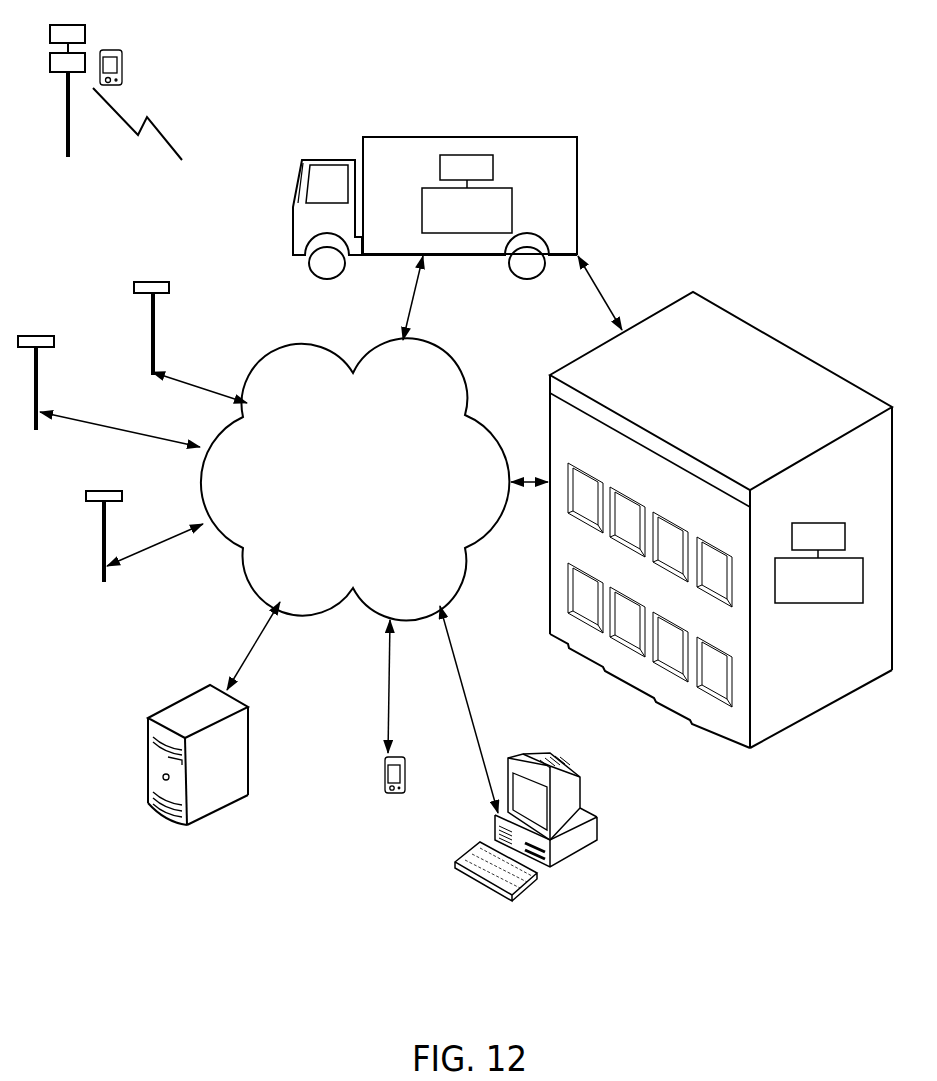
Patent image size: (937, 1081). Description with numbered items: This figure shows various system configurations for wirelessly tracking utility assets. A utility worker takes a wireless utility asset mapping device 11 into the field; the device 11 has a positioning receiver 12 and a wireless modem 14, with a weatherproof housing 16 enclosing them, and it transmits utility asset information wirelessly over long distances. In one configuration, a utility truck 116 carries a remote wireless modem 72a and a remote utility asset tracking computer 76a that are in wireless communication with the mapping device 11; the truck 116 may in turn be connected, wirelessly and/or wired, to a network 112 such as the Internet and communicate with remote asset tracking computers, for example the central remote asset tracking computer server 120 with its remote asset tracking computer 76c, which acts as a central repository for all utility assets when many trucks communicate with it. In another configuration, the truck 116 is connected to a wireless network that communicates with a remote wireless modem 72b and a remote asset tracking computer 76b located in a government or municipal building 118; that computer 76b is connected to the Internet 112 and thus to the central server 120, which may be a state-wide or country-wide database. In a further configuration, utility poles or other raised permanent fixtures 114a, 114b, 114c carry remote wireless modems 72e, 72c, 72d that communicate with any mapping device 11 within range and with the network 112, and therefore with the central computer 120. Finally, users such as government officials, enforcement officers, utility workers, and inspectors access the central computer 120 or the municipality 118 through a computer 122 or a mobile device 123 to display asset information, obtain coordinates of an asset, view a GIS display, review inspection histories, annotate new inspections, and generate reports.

The wireless utility asset mapping device 11 is at (122, 28).
The positioning receiver 12 is at (50, 33).
The wireless modem 14 is at (50, 64).
The weatherproof housing 16 is at (124, 68).
The utility truck 116 is at (547, 137).
The remote wireless modem 72a is at (466, 167).
The remote utility asset tracking computer 76a is at (467, 206).
The network 112 is at (355, 479).
The remote wireless modem 72e is at (159, 281).
The utility pole 114a is at (154, 328).
The remote wireless modem 72c is at (40, 334).
The utility pole 114b is at (38, 385).
The remote wireless modem 72d is at (98, 489).
The utility pole 114c is at (103, 535).
The municipal building 118 is at (714, 732).
The remote wireless modem 72b is at (818, 536).
The remote asset tracking computer 76b is at (819, 576).
The central remote asset tracking computer server 120 is at (150, 801).
The remote asset tracking computer 76c is at (212, 764).
The mobile device 123 is at (385, 787).
The computer 122 is at (597, 829).